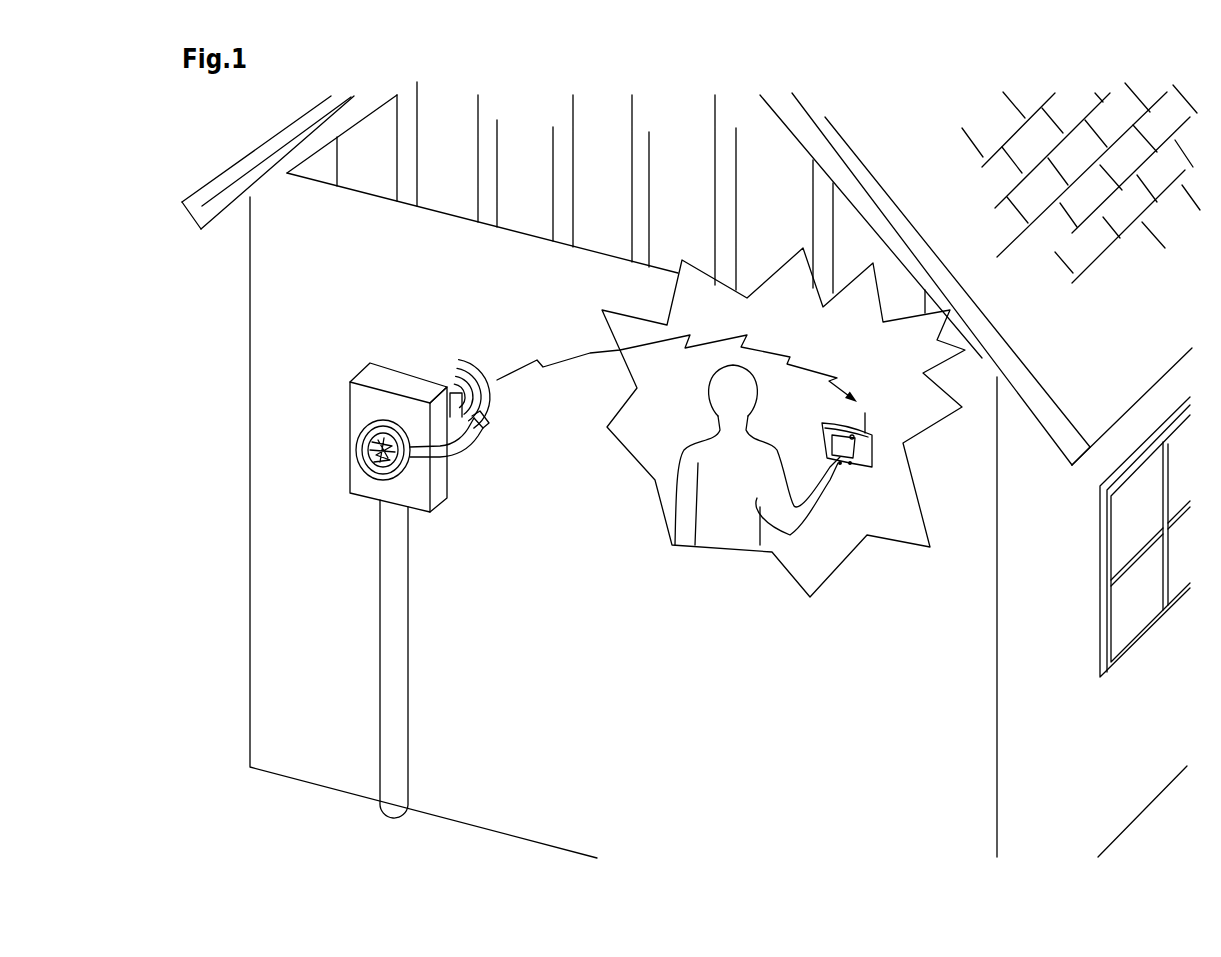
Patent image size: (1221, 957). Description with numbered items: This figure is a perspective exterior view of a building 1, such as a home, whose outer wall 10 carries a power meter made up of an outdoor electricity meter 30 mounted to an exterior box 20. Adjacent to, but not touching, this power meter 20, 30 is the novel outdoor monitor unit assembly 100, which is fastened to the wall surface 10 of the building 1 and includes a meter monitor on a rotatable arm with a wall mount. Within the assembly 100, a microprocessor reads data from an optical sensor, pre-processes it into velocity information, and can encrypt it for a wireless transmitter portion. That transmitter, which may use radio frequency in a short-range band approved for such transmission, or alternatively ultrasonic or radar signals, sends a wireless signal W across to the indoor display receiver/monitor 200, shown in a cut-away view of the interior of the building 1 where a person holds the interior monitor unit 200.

The building 1 is at (160, 122).
The outer wall 10 is at (275, 373).
The exterior box 20 is at (368, 412).
The outdoor electricity meter 30 is at (377, 468).
The outdoor monitor unit assembly 100 is at (403, 411).
The indoor display receiver/monitor 200 is at (872, 393).
The wireless signal W is at (562, 336).